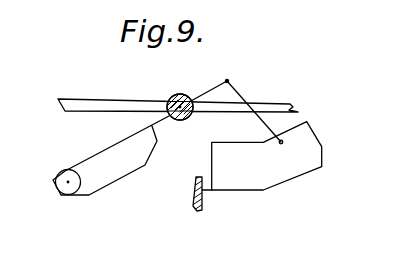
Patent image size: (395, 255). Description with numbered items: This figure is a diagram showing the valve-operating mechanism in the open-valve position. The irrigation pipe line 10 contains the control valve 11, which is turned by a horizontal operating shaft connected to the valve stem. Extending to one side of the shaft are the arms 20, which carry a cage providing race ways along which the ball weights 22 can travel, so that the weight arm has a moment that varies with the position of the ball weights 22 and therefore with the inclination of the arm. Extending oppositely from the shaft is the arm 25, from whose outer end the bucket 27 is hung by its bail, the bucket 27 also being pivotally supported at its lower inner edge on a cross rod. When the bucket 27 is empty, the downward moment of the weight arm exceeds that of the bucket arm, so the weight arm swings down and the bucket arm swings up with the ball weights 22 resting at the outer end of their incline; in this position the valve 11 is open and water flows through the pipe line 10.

The irrigation pipe line 10 is at (281, 110).
The control valve 11 is at (178, 93).
The arms 20 is at (148, 124).
The ball weights 22 is at (66, 183).
The arm 25 is at (207, 82).
The bucket 27 is at (255, 171).